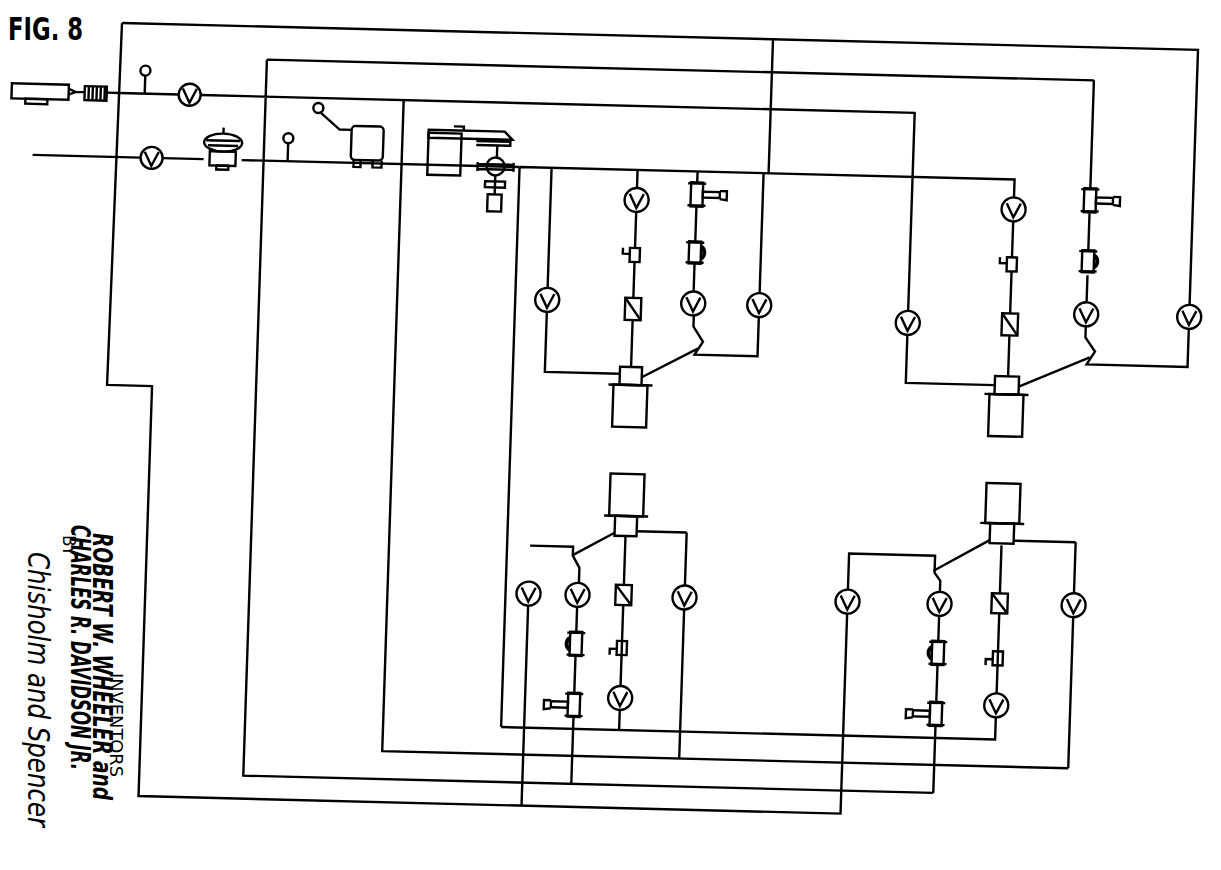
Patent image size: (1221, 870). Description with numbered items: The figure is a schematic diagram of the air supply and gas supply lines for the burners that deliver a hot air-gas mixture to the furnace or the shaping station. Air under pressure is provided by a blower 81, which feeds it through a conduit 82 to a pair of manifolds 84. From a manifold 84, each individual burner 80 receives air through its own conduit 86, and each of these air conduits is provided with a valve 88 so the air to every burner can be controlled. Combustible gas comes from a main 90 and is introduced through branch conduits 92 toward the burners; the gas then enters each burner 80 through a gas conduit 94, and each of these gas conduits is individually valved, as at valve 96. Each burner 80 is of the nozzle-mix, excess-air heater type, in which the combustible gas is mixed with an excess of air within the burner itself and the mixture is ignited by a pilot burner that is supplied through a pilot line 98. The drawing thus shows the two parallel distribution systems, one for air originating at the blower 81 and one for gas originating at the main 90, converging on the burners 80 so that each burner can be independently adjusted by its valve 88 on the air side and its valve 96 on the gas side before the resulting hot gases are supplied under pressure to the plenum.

The burner 80 is at (654, 414).
The blower 81 is at (40, 106).
The conduit 82 is at (342, 93).
The manifold 84 is at (484, 93).
The conduit 86 is at (556, 207).
The valve 88 is at (568, 296).
The main 90 is at (72, 157).
The branch conduit 92 is at (841, 157).
The gas conduit 94 is at (648, 237).
The valve 96 is at (654, 190).
The pilot line 98 is at (704, 207).